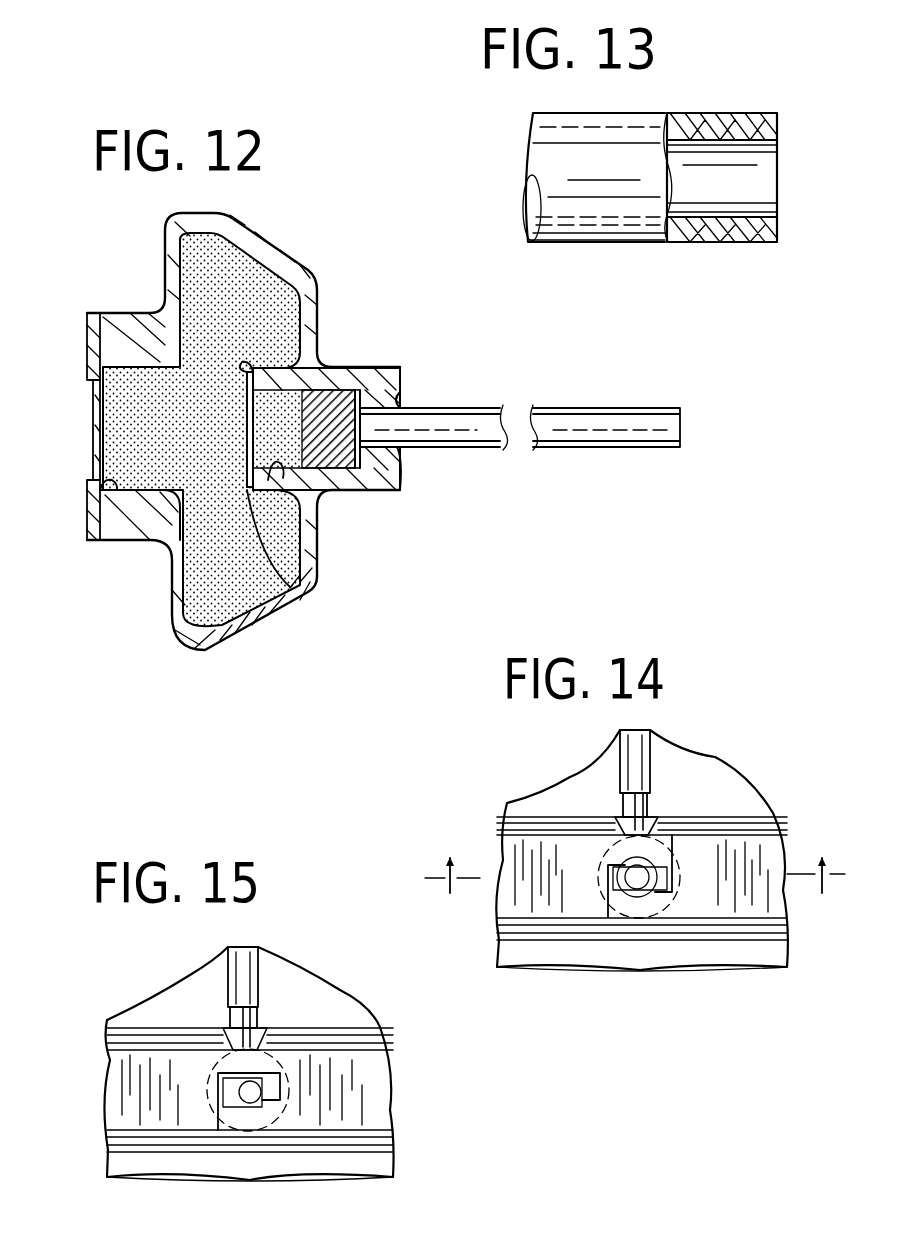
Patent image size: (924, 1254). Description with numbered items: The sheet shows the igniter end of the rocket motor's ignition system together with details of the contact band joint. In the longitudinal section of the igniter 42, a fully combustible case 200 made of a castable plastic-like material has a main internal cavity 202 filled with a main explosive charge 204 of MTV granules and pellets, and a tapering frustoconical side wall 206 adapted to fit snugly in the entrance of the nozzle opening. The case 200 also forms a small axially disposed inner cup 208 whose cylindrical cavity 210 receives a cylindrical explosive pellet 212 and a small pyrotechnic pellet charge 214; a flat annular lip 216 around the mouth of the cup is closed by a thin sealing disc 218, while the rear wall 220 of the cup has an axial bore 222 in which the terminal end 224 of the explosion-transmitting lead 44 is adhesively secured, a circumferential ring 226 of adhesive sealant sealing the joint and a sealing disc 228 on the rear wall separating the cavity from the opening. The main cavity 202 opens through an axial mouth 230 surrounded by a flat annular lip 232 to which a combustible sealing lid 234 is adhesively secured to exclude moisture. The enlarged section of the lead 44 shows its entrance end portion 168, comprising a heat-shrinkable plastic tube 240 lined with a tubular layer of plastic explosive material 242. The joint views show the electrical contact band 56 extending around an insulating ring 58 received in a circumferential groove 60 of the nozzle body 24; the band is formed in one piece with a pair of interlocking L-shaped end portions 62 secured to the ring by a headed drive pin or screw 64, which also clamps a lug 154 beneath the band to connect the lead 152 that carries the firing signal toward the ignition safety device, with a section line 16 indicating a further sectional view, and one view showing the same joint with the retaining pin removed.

In FIG. 12, the combustible case 200 is at (168, 618).
In FIG. 12, the main internal cavity 202 is at (187, 260).
In FIG. 12, the main explosive charge 204 is at (268, 300).
In FIG. 12, the frustoconical side wall 206 is at (250, 628).
In FIG. 12, the inner cup 208 is at (278, 366).
In FIG. 12, the cylindrical cavity 210 is at (303, 540).
In FIG. 12, the explosive pellet 212 is at (337, 397).
In FIG. 12, the pyrotechnic pellet charge 214 is at (272, 470).
In FIG. 12, the annular lip 216 is at (252, 372).
In FIG. 12, the sealing disc 218 is at (292, 592).
In FIG. 12, the rear wall 220 is at (400, 455).
In FIG. 12, the axial bore 222 is at (402, 410).
In FIG. 12, the terminal end 224 is at (417, 428).
In FIG. 12, the ring of adhesive sealant 226 is at (403, 408).
In FIG. 12, the sealing disc 228 is at (358, 400).
In FIG. 12, the axial mouth 230 is at (100, 490).
In FIG. 12, the annular lip 232 is at (100, 545).
In FIG. 12, the sealing lid 234 is at (97, 458).
In FIG. 12, the igniter 42 is at (172, 650).
In FIG. 12, the explosion-transmitting lead 44 is at (497, 452).
In FIG. 13, the explosion-transmitting lead 44 is at (600, 243).
In FIG. 13, the entrance end portion 168 is at (780, 170).
In FIG. 13, the plastic tube 240 is at (700, 118).
In FIG. 13, the plastic explosive material 242 is at (765, 222).
In FIG. 14, the electrical contact band 56 is at (513, 855).
In FIG. 15, the electrical contact band 56 is at (383, 1087).
In FIG. 14, the insulating ring 58 is at (777, 827).
In FIG. 15, the insulating ring 58 is at (380, 1038).
In FIG. 14, the circumferential groove 60 is at (785, 925).
In FIG. 15, the circumferential groove 60 is at (378, 1132).
In FIG. 14, the lead 152 is at (655, 815).
In FIG. 15, the lead 152 is at (245, 998).
In FIG. 14, the lug 154 is at (680, 905).
In FIG. 15, the lug 154 is at (292, 1125).
In FIG. 14, the interlocking L-shaped end portions 62 is at (612, 887).
In FIG. 15, the interlocking L-shaped end portions 62 is at (262, 1100).
In FIG. 14, the drive pin or screw 64 is at (640, 895).
In FIG. 15, the drive pin or screw 64 is at (250, 1092).
In FIG. 14, the nozzle body 24 is at (530, 970).
In FIG. 15, the nozzle body 24 is at (138, 1180).
In FIG. 14, the section line 16 is at (640, 871).